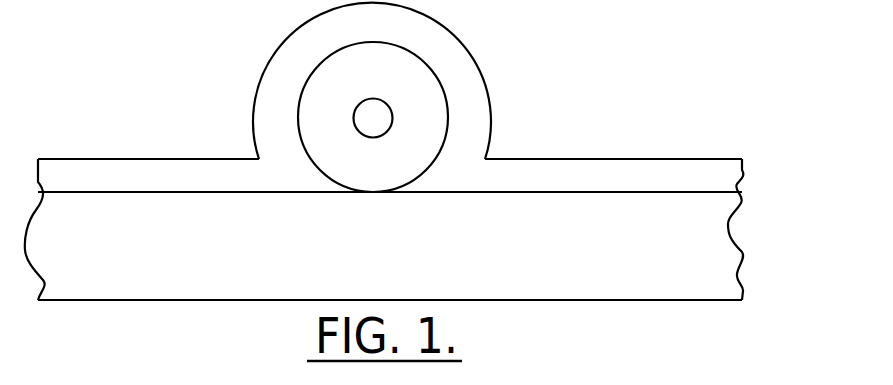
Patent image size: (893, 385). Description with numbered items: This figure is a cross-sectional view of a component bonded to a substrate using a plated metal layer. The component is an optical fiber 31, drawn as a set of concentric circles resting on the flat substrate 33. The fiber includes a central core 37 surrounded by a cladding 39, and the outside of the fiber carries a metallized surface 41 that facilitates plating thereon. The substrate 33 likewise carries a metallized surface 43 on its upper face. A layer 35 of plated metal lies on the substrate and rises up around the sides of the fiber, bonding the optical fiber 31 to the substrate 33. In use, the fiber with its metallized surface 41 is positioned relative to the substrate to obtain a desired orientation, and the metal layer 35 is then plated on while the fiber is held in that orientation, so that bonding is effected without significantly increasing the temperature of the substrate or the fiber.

The optical fiber 31 is at (367, 97).
The substrate 33 is at (742, 252).
The layer of plated metal 35 is at (595, 159).
The core 37 is at (387, 117).
The cladding 39 is at (317, 75).
The metallized surface 41 is at (297, 108).
The metallized surface 43 is at (105, 192).